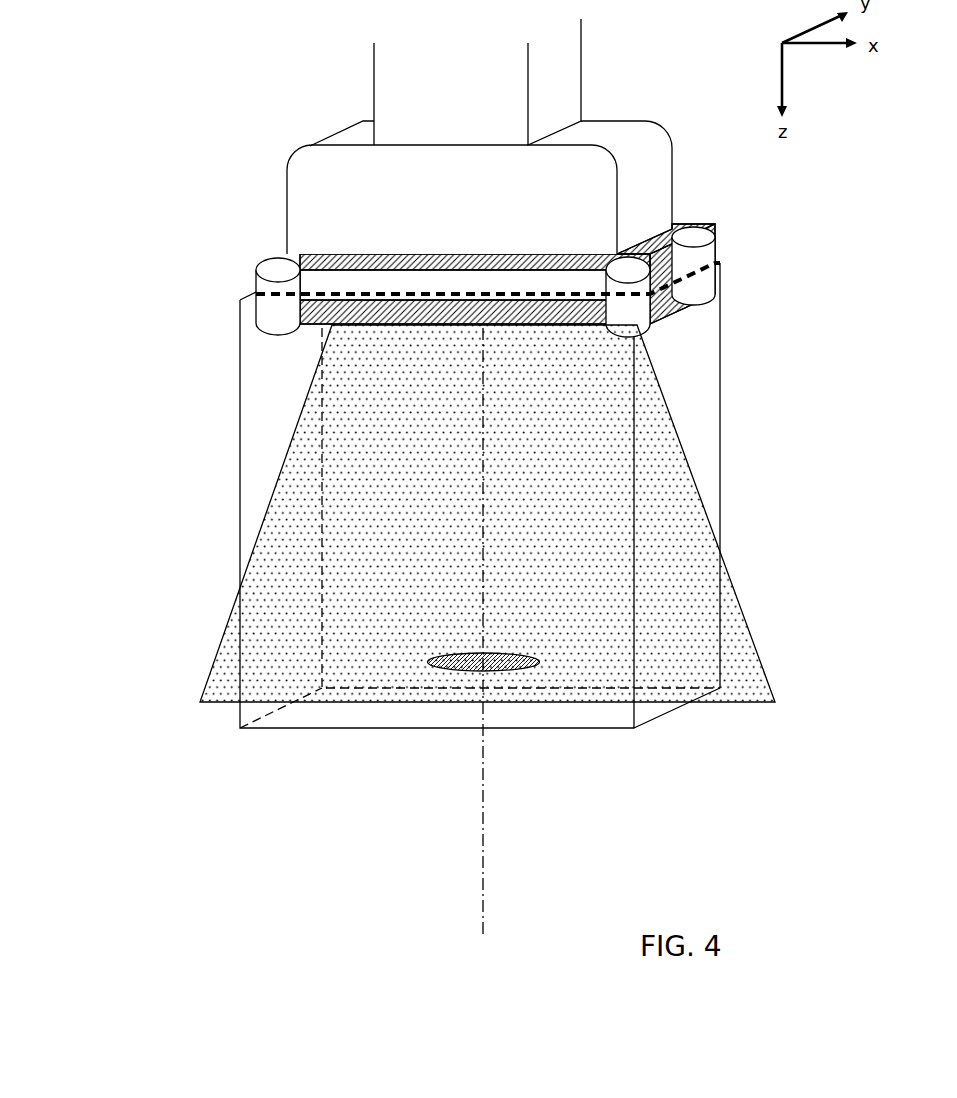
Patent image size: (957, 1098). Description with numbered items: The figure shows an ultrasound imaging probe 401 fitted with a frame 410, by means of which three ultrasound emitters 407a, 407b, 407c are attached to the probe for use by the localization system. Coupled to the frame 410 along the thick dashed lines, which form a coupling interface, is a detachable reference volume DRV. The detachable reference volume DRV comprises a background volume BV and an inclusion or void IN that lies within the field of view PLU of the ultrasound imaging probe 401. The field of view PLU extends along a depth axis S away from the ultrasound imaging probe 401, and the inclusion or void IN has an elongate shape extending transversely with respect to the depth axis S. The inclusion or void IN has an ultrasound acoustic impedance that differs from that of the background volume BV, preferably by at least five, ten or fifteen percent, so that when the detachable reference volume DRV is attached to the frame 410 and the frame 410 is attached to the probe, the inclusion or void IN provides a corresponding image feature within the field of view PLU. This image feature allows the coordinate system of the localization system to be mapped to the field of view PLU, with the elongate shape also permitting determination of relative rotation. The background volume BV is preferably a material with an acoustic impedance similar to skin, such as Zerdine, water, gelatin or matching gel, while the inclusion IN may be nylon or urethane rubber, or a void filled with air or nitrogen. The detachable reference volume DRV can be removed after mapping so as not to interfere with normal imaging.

The ultrasound imaging probe 401 is at (400, 87).
The frame 410 is at (415, 280).
The ultrasound emitter 407a is at (272, 322).
The ultrasound emitter 407b is at (633, 328).
The ultrasound emitter 407c is at (700, 290).
The detachable reference volume DRV is at (720, 405).
The background volume BV is at (703, 448).
The field of view PLU is at (223, 633).
The inclusion or void IN is at (523, 667).
The depth axis S is at (483, 854).